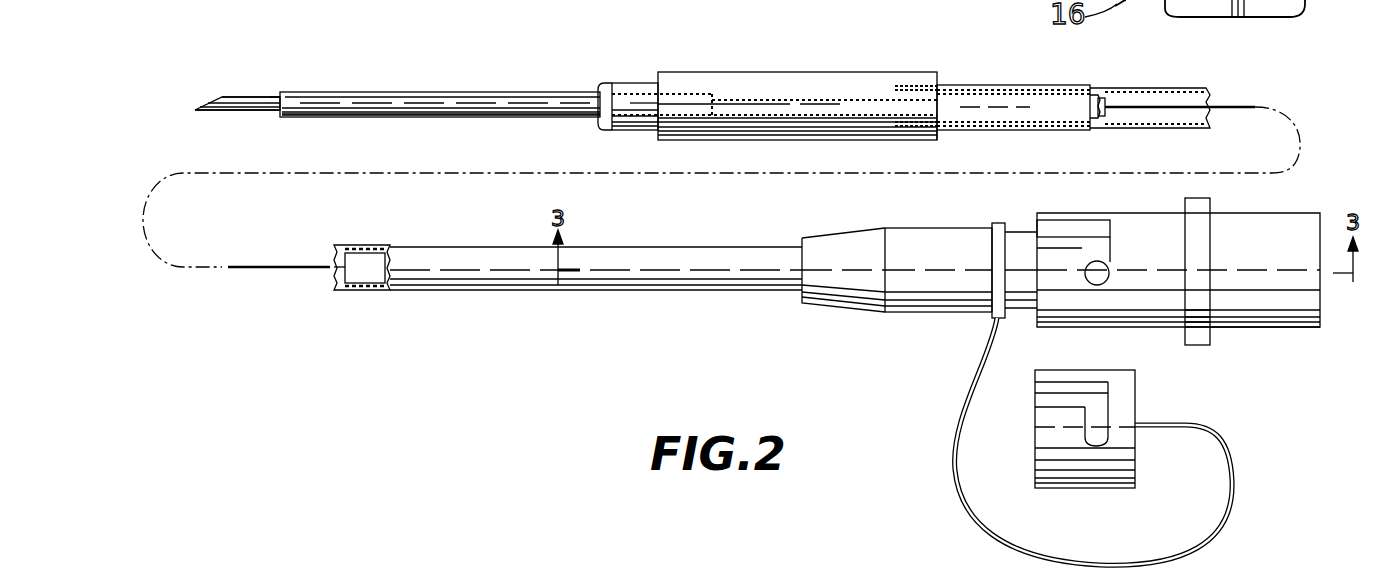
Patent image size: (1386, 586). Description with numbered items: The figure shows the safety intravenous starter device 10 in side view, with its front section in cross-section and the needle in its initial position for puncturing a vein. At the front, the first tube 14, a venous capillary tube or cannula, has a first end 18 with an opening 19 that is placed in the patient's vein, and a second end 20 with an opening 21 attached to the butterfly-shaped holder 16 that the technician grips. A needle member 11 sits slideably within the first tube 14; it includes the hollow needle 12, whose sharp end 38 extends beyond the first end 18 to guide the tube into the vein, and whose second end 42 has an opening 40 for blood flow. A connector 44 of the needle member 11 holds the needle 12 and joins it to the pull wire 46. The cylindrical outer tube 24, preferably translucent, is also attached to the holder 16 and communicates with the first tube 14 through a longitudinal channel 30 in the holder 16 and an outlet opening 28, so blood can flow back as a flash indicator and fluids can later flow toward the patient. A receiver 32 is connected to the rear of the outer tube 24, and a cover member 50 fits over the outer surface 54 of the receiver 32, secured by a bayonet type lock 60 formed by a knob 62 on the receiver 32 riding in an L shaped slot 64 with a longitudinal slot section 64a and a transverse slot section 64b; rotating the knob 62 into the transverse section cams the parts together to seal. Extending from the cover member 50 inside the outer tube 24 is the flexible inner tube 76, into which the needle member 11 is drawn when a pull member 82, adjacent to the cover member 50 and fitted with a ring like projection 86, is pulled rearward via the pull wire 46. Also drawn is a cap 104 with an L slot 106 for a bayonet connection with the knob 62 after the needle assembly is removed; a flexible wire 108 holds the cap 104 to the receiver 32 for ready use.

The safety intravenous starter device 10 is at (533, 125).
The needle member 11 is at (232, 111).
The needle 12 is at (238, 96).
The first tube 14 is at (310, 118).
The holder 16 is at (757, 78).
The first end 18 is at (284, 94).
The opening 19 is at (276, 96).
The second end 20 is at (692, 96).
The opening 21 is at (712, 100).
The outer tube 24 is at (1175, 130).
The outlet opening 28 is at (878, 88).
The longitudinal channel 30 is at (805, 98).
The receiver 32 is at (865, 312).
The sharp end 38 is at (197, 108).
The opening 40 is at (978, 96).
The second end 42 is at (925, 130).
The connector 44 is at (1097, 102).
The pull wire 46 is at (1237, 107).
The cover member 50 is at (1170, 285).
The outer surface 54 is at (950, 232).
The bayonet type lock 60 is at (1036, 240).
The knob 62 is at (1094, 278).
The L shaped slot 64 is at (1088, 250).
The longitudinal slot section 64a is at (1058, 230).
The transverse slot section 64b is at (1115, 252).
The inner tube 76 is at (368, 246).
The pull member 82 is at (1295, 322).
The ring like projection 86 is at (1200, 242).
The cap 104 is at (1115, 475).
The L slot 106 is at (1092, 448).
The flexible wire 108 is at (960, 490).